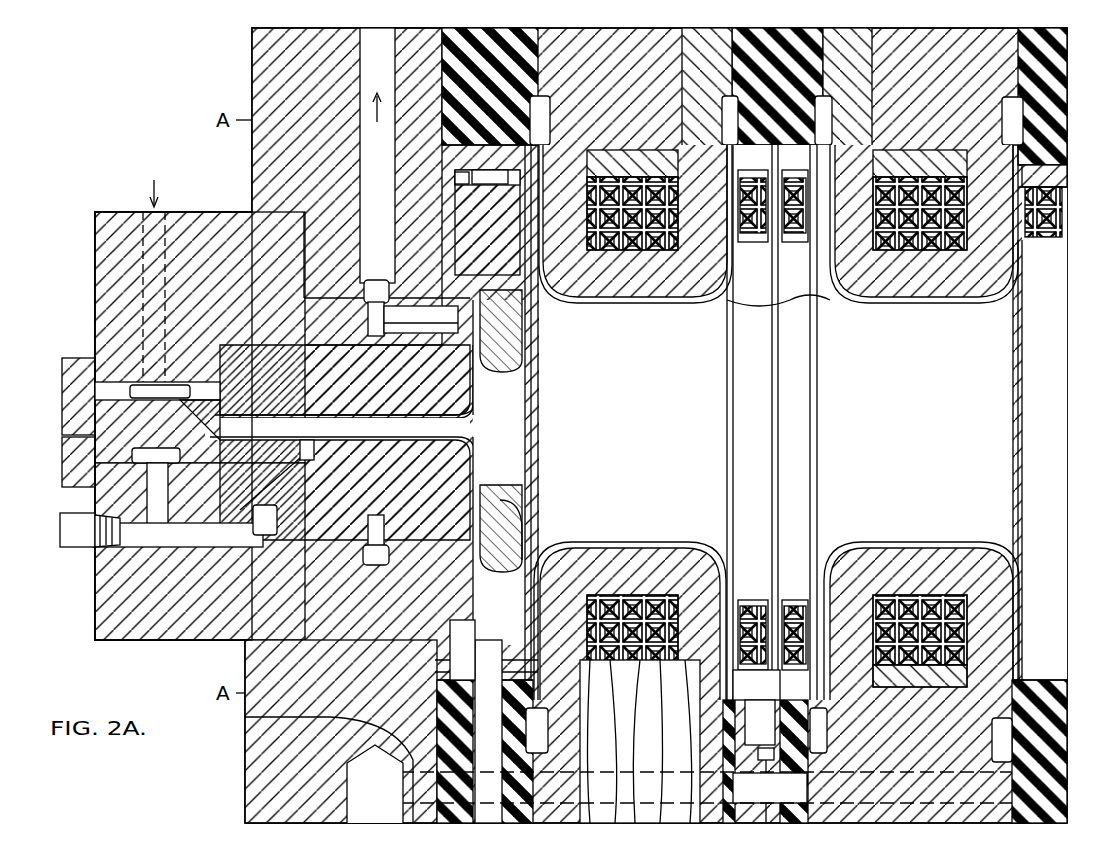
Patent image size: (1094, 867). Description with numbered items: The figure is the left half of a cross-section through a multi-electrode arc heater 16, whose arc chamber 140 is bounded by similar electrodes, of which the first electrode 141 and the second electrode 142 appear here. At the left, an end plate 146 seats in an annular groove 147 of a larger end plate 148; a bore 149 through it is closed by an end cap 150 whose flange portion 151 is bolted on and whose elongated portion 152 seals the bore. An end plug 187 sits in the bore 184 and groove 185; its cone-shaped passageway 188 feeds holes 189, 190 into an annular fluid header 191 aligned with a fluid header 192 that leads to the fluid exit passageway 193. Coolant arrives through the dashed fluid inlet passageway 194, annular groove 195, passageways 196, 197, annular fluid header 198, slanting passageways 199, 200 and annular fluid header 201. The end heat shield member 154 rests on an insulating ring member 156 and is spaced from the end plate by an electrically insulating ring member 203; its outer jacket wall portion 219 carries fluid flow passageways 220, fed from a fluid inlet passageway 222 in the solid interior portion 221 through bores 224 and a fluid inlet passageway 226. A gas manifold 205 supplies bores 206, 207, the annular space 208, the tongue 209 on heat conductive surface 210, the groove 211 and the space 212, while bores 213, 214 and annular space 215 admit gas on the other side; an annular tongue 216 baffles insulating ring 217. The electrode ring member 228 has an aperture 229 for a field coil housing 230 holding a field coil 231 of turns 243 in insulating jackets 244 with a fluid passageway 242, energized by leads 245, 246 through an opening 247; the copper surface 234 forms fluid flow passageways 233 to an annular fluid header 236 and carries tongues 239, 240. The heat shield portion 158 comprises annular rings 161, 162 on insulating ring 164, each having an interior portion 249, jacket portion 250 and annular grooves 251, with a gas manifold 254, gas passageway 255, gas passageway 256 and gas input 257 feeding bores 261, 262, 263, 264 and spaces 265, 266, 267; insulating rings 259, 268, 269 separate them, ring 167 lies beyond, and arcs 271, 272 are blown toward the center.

The pump housing 16 is at (1067, 812).
The arc chamber 140 is at (776, 422).
The first electrode 141 is at (636, 298).
The second electrode 142 is at (922, 298).
The end plate 146 is at (178, 640).
The annular groove 147 is at (300, 604).
The end plate 148 is at (245, 771).
The bore 149 is at (196, 392).
The end cap 150 is at (64, 388).
The flange portion 151 is at (64, 460).
The elongated portion 152 is at (122, 385).
The end heat shield member 154 is at (510, 362).
The ring member 156 is at (535, 48).
The heat shield portion 158 is at (722, 446).
The annular ring 161 is at (755, 242).
The annular ring 162 is at (796, 242).
The annular ring 164 is at (822, 48).
The annular ring 167 is at (1042, 238).
The bore 184 is at (352, 294).
The annular groove 185 is at (238, 494).
The end plug 187 is at (336, 556).
The cone-shaped passageway 188 is at (380, 445).
The hole 189 is at (399, 333).
The hole 190 is at (420, 512).
The annular fluid header 191 is at (369, 330).
The fluid header 192 is at (380, 555).
The fluid exit passageway 193 is at (364, 134).
The fluid inlet passageway 194 is at (150, 251).
The annular groove 195 is at (145, 462).
The passageway 196 is at (166, 485).
The passageway 197 is at (172, 557).
The annular fluid header 198 is at (262, 530).
The slanting passageway 199 is at (286, 372).
The slanting passageway 200 is at (296, 474).
The annular fluid header 201 is at (308, 458).
The electrically insulating ring member 203 is at (445, 673).
The gas manifold 205 is at (503, 172).
The bore 206 is at (465, 172).
The bore 207 is at (450, 653).
The annular space 208 is at (399, 222).
The tongue 209 is at (466, 320).
The heat conductive surface 210 is at (413, 430).
The groove 211 is at (492, 301).
The space 212 is at (462, 412).
The bore 213 is at (487, 222).
The bore 214 is at (525, 670).
The annular space 215 is at (588, 201).
The annular tongue 216 is at (525, 650).
The insulating ring 217 is at (530, 688).
The outer jacket wall portion 219 is at (484, 483).
The fluid flow passageways 220 is at (504, 498).
The interior portion 221 is at (465, 624).
The fluid inlet passageway 222 is at (452, 576).
The bores 224 is at (522, 538).
The fluid inlet passageway 226 is at (445, 703).
The ring member 228 is at (640, 560).
The aperture 229 is at (600, 598).
The field coil housing 230 is at (680, 592).
The field coil 231 is at (665, 685).
The fluid flow passageways 233 is at (596, 561).
The copper surface 234 is at (666, 561).
The annular fluid header 236 is at (540, 753).
The tongue 239 is at (539, 600).
The tongue 240 is at (672, 628).
The fluid passageway 242 is at (672, 667).
The turns 243 is at (672, 608).
The insulating jackets 244 is at (636, 601).
The lead 245 is at (604, 790).
The lead 246 is at (665, 766).
The opening 247 is at (660, 801).
The interior portion 249 is at (753, 628).
The jacket portion 250 is at (778, 600).
The annular grooves 251 is at (770, 746).
The gas manifold 254 is at (820, 759).
The gas passageway 255 is at (722, 731).
The gas passageway 256 is at (918, 785).
The gas input 257 is at (348, 800).
The electrical insulating ring 259 is at (822, 730).
The bore 261 is at (672, 686).
The bore 262 is at (800, 619).
The bore 263 is at (822, 637).
The bore 264 is at (822, 675).
The space 265 is at (672, 648).
The space 266 is at (795, 628).
The space 267 is at (822, 656).
The insulating ring member 268 is at (672, 705).
The insulating ring member 269 is at (822, 695).
The arc 271 is at (826, 302).
The arc 272 is at (1046, 293).